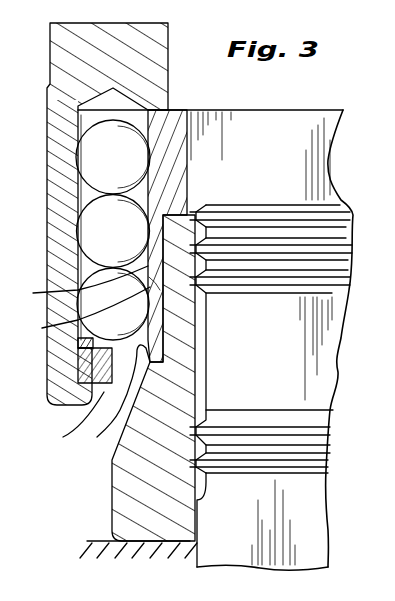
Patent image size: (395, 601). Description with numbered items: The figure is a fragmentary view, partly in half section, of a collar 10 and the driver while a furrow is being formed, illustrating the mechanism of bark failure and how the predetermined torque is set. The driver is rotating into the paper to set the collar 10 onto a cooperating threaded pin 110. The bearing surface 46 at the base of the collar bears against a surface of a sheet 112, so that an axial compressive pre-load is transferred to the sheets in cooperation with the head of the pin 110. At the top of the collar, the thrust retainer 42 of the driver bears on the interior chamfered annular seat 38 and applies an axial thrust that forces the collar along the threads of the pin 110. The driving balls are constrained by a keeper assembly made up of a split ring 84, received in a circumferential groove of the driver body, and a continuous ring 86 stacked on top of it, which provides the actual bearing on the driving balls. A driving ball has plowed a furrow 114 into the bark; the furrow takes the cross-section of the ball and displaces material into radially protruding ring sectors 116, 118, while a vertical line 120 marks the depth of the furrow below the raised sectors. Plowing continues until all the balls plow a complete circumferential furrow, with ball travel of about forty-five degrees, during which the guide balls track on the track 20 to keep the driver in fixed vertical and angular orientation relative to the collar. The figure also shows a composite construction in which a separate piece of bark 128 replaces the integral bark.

The collar 10 is at (111, 486).
The track 20 is at (148, 232).
The annular seat 38 is at (196, 198).
The thrust retainer 42 is at (188, 160).
The bearing surface 46 is at (163, 543).
The ring 84 is at (68, 423).
The ring 86 is at (56, 400).
The threaded pin 110 is at (280, 212).
The sheet 112 is at (86, 541).
The furrow 114 is at (78, 350).
The ring sector 116 is at (112, 397).
The ring sector 118 is at (74, 285).
The vertical line 120 is at (75, 317).
The piece of bark 128 is at (150, 277).